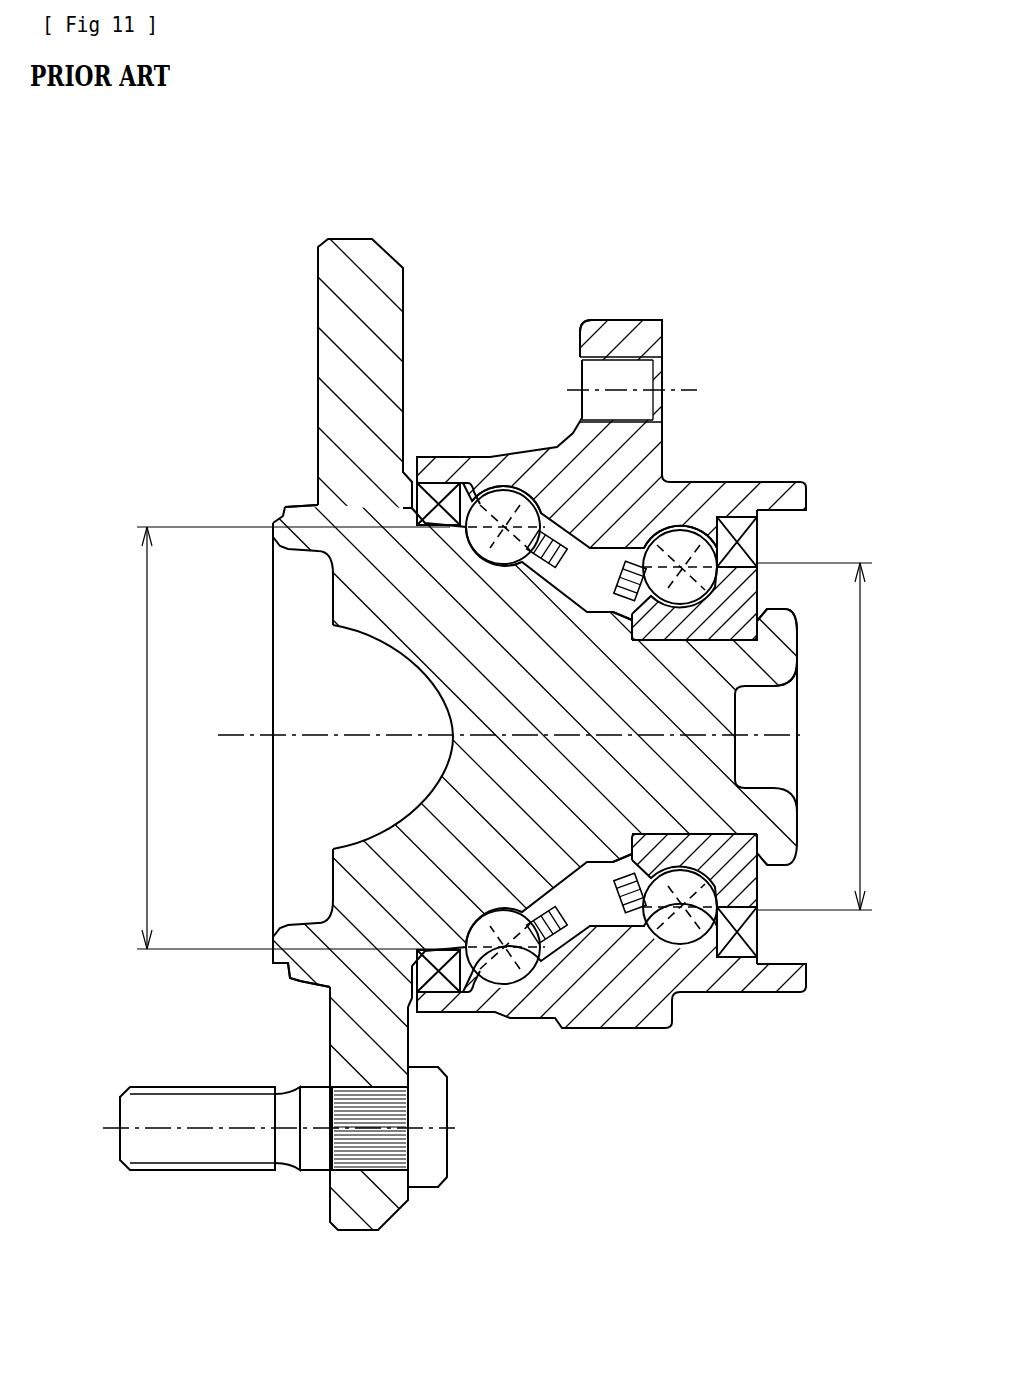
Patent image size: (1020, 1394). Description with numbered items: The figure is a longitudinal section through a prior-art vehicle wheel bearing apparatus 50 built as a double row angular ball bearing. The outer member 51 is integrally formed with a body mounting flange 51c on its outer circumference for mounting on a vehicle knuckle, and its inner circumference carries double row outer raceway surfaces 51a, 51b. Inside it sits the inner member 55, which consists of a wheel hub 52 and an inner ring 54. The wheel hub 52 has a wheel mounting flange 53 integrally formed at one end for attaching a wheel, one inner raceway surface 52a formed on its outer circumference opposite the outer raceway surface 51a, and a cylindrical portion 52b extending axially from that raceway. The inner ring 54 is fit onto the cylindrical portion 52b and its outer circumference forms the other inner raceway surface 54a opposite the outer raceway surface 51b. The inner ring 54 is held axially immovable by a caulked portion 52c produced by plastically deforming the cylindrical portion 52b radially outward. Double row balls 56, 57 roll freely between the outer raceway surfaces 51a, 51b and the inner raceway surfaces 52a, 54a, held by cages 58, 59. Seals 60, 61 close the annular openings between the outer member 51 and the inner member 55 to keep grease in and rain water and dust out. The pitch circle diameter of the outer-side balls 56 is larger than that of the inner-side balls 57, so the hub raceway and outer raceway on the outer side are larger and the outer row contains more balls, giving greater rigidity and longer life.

The vehicle wheel bearing apparatus 50 is at (713, 301).
The outer member 51 is at (562, 470).
The outer raceway surface 51a is at (492, 522).
The outer raceway surface 51b is at (714, 560).
The body mounting flange 51c is at (614, 340).
The wheel hub 52 is at (420, 580).
The inner raceway surface 52a is at (290, 508).
The cylindrical portion 52b is at (687, 617).
The caulked portion 52c is at (775, 636).
The wheel mounting flange 53 is at (357, 262).
The inner ring 54 is at (720, 595).
The inner raceway surface 54a is at (673, 567).
The inner member 55 is at (360, 624).
The balls 56 is at (515, 975).
The balls 57 is at (688, 945).
The cage 58 is at (542, 910).
The cage 59 is at (613, 860).
The seal 60 is at (300, 977).
The seal 61 is at (760, 932).